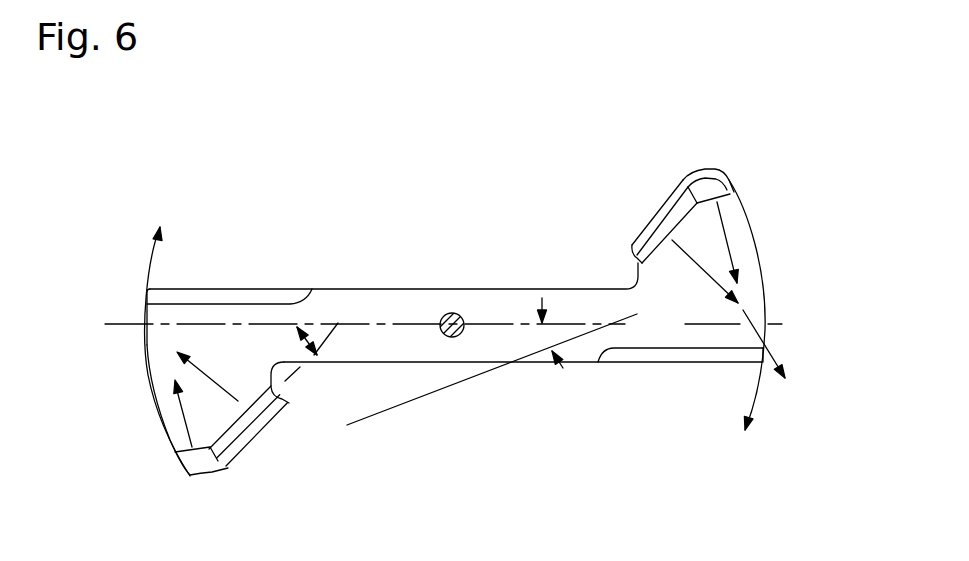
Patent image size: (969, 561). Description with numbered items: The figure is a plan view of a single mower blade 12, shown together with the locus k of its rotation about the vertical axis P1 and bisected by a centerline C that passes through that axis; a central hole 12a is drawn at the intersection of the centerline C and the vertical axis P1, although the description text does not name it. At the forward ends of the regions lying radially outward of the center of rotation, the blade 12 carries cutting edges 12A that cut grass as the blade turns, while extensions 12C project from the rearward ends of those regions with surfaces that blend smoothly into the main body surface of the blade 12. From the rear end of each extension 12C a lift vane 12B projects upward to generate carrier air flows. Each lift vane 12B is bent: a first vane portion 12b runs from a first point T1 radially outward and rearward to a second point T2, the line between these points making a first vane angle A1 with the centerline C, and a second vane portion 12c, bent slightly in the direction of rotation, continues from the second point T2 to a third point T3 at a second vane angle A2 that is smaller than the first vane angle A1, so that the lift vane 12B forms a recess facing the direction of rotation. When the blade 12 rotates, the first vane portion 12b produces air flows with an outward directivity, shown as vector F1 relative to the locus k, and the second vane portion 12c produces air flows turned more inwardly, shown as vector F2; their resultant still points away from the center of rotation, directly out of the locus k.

The blade 12 is at (338, 282).
The cutting edge 12A is at (228, 296).
The lift vane 12B is at (338, 437).
The extension 12C is at (147, 352).
The pivot hole 12a is at (452, 313).
The first vane portion 12b is at (247, 423).
The second vane portion 12c is at (240, 470).
The blade centerline C is at (372, 326).
The vertical axis P1 is at (460, 336).
The first vane angle A1 is at (302, 343).
The second vane angle A2 is at (545, 338).
The resultant vector of air flows produced by the first vane portion F1 is at (208, 380).
The resultant vector of air flows produced by the second vane portion F2 is at (185, 421).
The locus of rotation k is at (147, 264).
The first point T1 is at (278, 402).
The second point T2 is at (250, 487).
The third point T3 is at (193, 477).